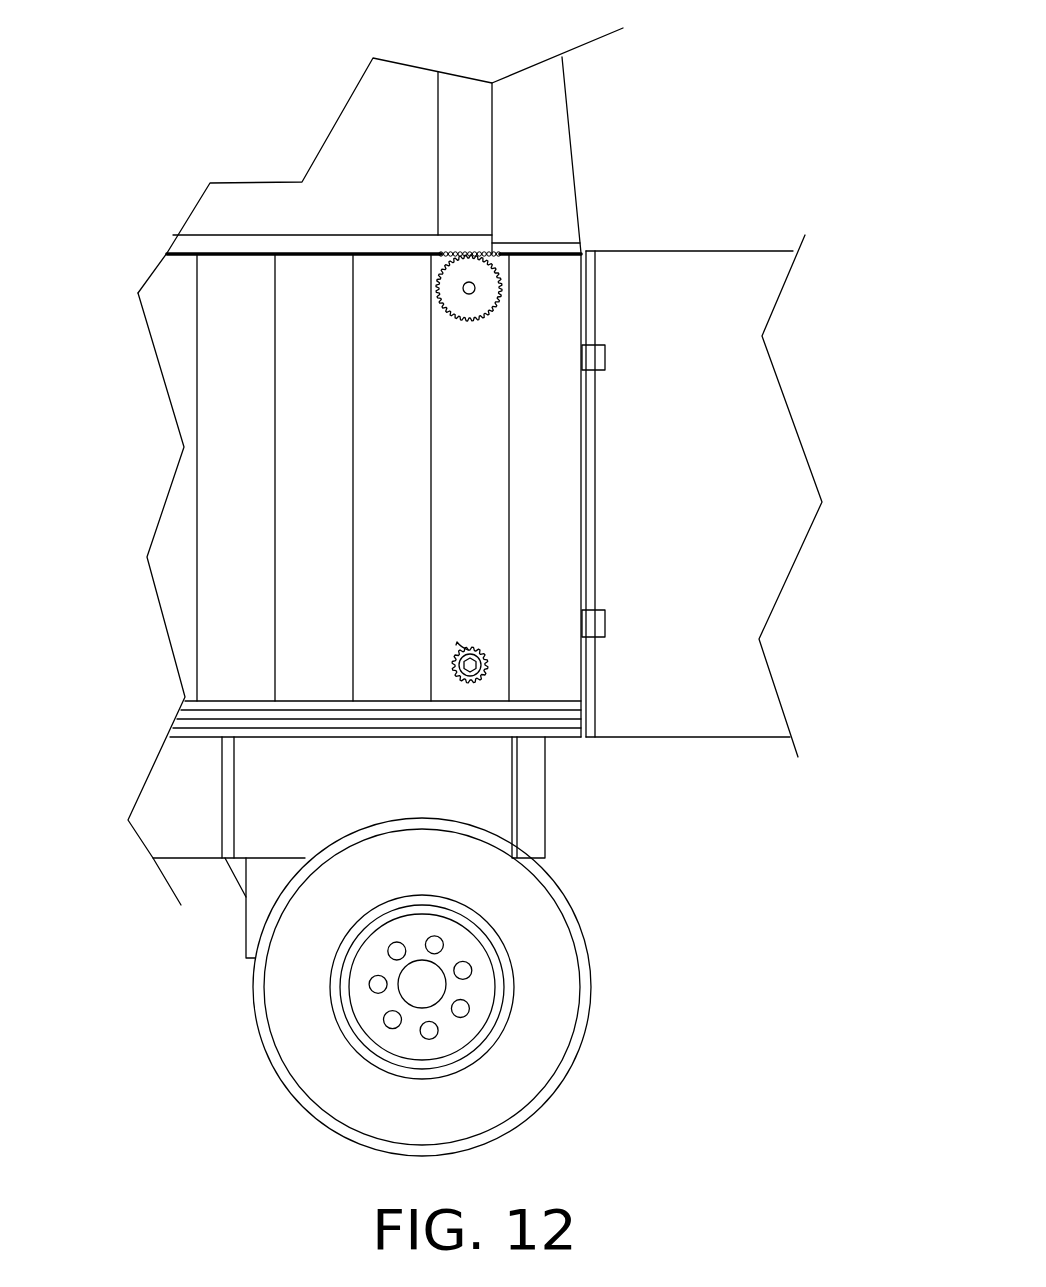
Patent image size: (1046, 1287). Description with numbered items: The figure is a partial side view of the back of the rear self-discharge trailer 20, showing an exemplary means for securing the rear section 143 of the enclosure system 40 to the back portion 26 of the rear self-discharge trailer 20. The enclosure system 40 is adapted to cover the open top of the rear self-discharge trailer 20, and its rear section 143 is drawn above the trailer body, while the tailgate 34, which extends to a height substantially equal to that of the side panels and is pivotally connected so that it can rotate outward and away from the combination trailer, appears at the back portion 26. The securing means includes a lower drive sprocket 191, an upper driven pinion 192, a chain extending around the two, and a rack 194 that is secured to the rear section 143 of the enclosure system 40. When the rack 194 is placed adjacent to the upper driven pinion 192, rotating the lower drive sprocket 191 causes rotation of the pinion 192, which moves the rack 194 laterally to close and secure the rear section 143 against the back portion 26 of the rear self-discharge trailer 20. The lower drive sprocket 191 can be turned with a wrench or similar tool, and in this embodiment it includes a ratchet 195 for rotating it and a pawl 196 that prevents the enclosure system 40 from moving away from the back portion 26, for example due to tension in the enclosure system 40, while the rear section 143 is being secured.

The rear self-discharge trailer 20 is at (230, 430).
The back portion 26 is at (567, 297).
The tailgate 34 is at (720, 320).
The enclosure system 40 is at (348, 157).
The rear section 143 is at (492, 122).
The lower drive sprocket 191 is at (485, 675).
The upper driven pinion 192 is at (485, 300).
The rack 194 is at (492, 232).
The ratchet 195 is at (487, 662).
The pawl 196 is at (461, 643).